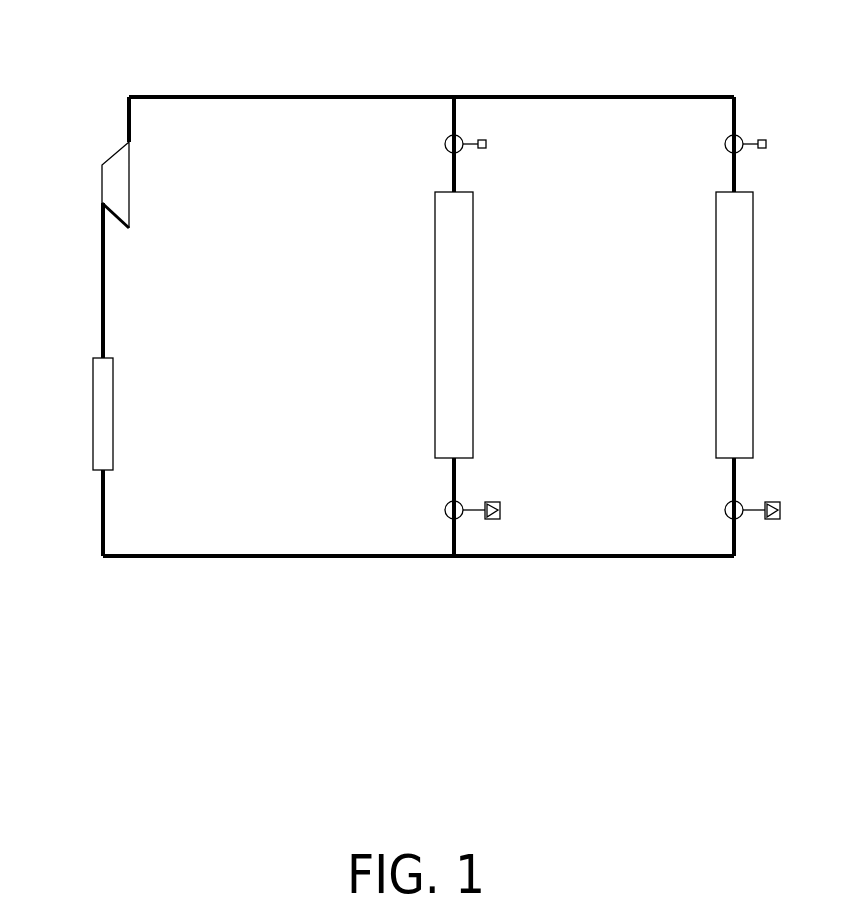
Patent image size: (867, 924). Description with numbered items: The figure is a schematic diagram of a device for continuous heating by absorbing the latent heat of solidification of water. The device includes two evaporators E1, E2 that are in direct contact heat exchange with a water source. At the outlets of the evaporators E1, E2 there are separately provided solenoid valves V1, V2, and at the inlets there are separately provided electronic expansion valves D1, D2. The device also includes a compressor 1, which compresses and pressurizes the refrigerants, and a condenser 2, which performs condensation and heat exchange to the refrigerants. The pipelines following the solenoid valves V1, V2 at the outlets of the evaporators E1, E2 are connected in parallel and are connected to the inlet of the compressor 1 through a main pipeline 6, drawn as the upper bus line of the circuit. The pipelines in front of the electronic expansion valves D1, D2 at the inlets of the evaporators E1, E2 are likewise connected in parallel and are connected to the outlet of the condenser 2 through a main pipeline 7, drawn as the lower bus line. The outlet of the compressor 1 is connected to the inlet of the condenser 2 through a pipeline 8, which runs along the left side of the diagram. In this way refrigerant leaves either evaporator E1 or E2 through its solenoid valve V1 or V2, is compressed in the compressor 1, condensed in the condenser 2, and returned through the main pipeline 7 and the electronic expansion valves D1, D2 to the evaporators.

The compressor 1 is at (102, 160).
The condenser 2 is at (93, 412).
The main pipeline 6 is at (270, 95).
The main pipeline 7 is at (268, 558).
The pipeline 8 is at (100, 295).
The solenoid valve V1 is at (457, 135).
The solenoid valve V2 is at (737, 135).
The evaporator E1 is at (478, 375).
The evaporator E2 is at (754, 378).
The electronic expansion valve D1 is at (460, 516).
The electronic expansion valve D2 is at (740, 516).